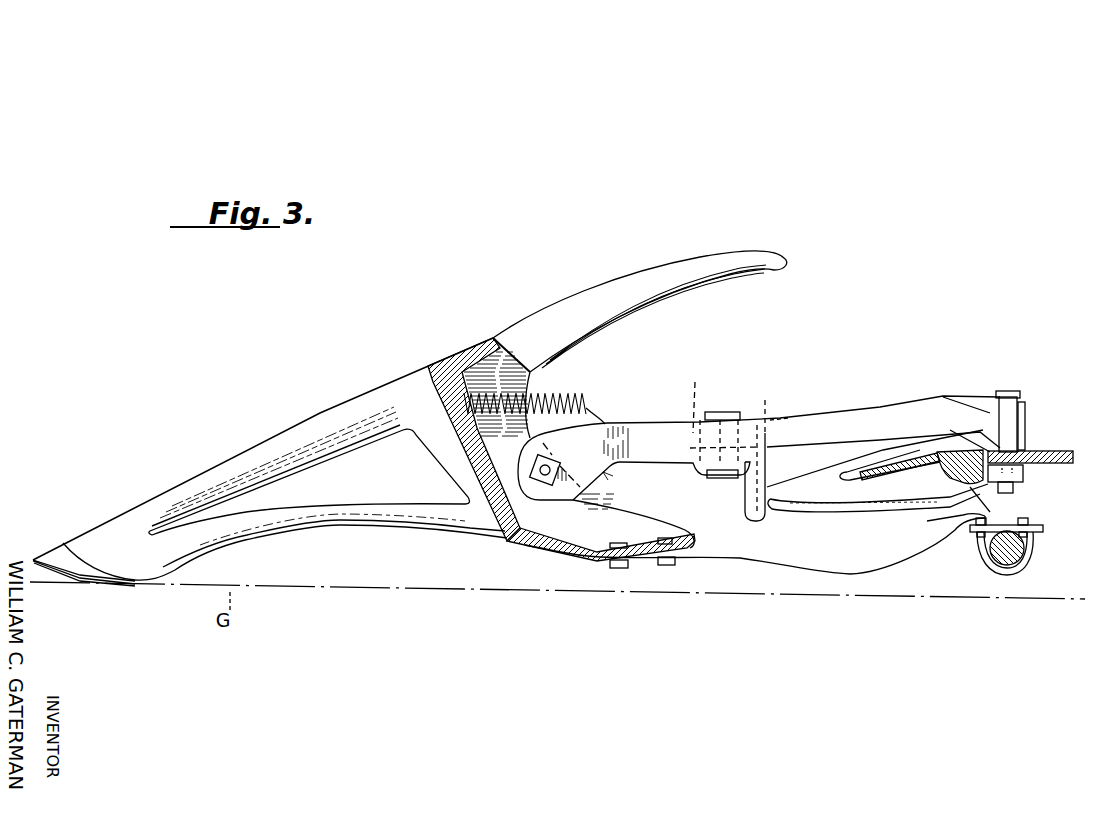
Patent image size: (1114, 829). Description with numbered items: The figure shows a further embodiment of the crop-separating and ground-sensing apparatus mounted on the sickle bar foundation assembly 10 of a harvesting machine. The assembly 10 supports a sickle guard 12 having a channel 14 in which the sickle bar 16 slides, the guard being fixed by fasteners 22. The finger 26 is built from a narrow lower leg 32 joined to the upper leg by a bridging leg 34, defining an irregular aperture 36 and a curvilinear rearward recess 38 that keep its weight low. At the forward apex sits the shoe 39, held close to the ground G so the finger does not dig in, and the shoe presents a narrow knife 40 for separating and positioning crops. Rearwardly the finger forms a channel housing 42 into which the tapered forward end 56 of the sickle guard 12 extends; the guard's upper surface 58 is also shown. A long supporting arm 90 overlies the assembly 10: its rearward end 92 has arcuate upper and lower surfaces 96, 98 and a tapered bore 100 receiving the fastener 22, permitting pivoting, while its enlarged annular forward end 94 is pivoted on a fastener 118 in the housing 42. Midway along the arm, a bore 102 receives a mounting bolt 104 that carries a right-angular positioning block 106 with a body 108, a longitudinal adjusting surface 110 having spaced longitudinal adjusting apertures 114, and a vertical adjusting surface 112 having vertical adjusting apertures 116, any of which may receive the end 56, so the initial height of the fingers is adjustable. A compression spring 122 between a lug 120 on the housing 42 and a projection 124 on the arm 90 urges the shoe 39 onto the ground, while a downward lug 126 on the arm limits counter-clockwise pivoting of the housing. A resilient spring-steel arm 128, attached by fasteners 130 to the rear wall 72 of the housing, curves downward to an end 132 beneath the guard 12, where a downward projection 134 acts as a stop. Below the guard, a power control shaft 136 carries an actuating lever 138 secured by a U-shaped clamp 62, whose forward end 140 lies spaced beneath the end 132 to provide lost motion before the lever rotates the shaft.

The sickle bar foundation assembly 10 is at (1088, 462).
The sickle guard 12 is at (899, 492).
The channel 14 is at (843, 475).
The sickle bar 16 is at (878, 462).
The fasteners 22 is at (1011, 397).
The fingers 26 is at (363, 386).
The lower leg 32 is at (320, 513).
The bridging leg 34 is at (443, 442).
The aperture 36 is at (300, 443).
The recess 38 is at (617, 319).
The shoe 39 is at (70, 543).
The knife 40 is at (37, 557).
The channel housing 42 is at (530, 517).
The forward end 56 is at (784, 499).
The upper surface 58 is at (792, 483).
The U-shaped clamp 62 is at (988, 572).
The rear wall 72 is at (578, 555).
The supporting arm 90 is at (669, 430).
The rearwardly disposed end 92 is at (1017, 443).
The forwardly disposed end 94 is at (573, 500).
The upper surface 96 is at (1023, 407).
The lower surface 98 is at (1047, 449).
The bore 100 is at (972, 401).
The bore 102 is at (742, 420).
The mounting bolt 104 is at (724, 412).
The positioning block 106 is at (697, 483).
The body 108 is at (702, 449).
The longitudinal adjusting surface 110 is at (700, 395).
The vertical adjusting surface 112 is at (743, 527).
The longitudinal adjusting apertures 114 is at (777, 418).
The vertical adjusting apertures 116 is at (767, 448).
The fastener 118 is at (558, 456).
The lug 120 is at (478, 377).
The compression spring 122 is at (538, 396).
The projection 124 is at (598, 417).
The lug 126 is at (609, 480).
The resilient arm 128 is at (848, 590).
The fasteners 130 is at (667, 563).
The end 132 is at (950, 518).
The projection 134 is at (973, 507).
The power control shaft 136 is at (1015, 556).
The actuating lever 138 is at (1043, 526).
The forwardly disposed end 140 is at (975, 535).